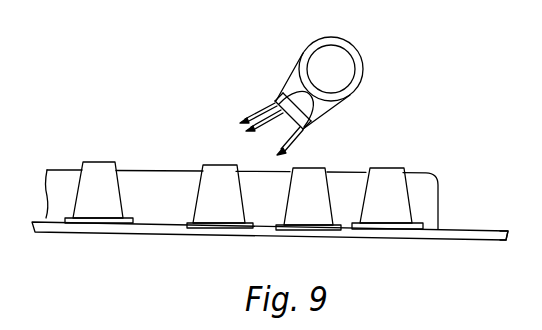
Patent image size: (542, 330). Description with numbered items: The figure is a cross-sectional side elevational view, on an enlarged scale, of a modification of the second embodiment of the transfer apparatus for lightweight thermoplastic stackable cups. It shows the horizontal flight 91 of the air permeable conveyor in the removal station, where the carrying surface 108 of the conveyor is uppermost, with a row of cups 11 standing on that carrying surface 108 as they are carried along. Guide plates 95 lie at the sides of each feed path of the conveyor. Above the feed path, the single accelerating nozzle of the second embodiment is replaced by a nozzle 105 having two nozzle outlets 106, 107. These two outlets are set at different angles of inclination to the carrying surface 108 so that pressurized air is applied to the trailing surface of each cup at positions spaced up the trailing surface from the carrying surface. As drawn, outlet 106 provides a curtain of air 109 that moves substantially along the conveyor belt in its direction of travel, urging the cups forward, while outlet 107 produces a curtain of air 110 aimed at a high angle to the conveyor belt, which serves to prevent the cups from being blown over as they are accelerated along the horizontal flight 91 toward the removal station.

The contact blocks 11 is at (100, 162).
The horizontal flight 91 is at (443, 238).
The guide plates 95 is at (433, 190).
The nozzle 105 is at (359, 52).
The nozzle outlet 106 is at (292, 95).
The nozzle outlet 107 is at (318, 116).
The carrying surface 108 is at (498, 229).
The curtain of air 109 is at (258, 112).
The curtain of air 110 is at (295, 142).